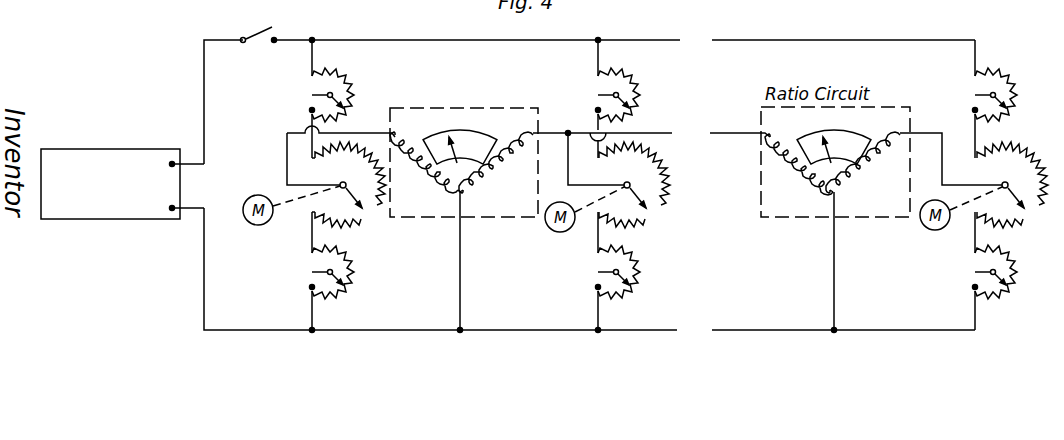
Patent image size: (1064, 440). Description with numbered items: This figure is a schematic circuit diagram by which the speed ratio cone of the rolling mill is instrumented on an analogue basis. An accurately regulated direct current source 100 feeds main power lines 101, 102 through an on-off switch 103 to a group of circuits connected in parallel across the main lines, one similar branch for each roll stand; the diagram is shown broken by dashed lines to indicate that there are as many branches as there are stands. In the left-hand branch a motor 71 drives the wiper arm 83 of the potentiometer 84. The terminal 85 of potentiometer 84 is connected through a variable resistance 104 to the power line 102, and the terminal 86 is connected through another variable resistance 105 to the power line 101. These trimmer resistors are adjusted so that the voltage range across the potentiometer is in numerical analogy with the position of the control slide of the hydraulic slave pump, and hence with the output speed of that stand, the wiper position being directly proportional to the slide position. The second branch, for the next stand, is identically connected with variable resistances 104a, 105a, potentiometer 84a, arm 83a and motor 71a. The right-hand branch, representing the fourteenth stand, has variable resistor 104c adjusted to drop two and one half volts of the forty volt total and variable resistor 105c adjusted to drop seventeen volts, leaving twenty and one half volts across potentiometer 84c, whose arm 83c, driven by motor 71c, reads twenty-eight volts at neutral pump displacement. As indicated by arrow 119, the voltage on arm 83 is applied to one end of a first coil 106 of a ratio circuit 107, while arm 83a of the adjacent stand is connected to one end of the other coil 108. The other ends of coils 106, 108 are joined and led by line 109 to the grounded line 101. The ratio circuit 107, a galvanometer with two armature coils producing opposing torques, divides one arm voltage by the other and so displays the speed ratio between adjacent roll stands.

The regulated direct current source 100 is at (77, 222).
The main power line 101 is at (204, 281).
The main power line 102 is at (204, 101).
The on-off switch 103 is at (267, 29).
The variable resistance 104 is at (338, 82).
The variable resistance 105 is at (356, 278).
The first coil 106 is at (425, 170).
The ratio circuit 107 is at (464, 163).
The other coil 108 is at (500, 170).
The line 109 is at (462, 296).
The arrow 119 is at (340, 133).
The motor 71 is at (254, 225).
The wiper arm 83 is at (352, 222).
The potentiometer 84 is at (372, 212).
The terminal 85 is at (312, 158).
The terminal 86 is at (312, 212).
The variable resistance 104a is at (615, 82).
The variable resistance 105a is at (633, 282).
The potentiometer arm 83a is at (658, 186).
The potentiometer 84a is at (668, 210).
The motor 71a is at (556, 232).
The variable resistor 104c is at (995, 75).
The variable resistor 105c is at (1002, 303).
The potentiometer arm 83c is at (1028, 192).
The potentiometer 84c is at (1012, 228).
The motor 71c is at (927, 232).